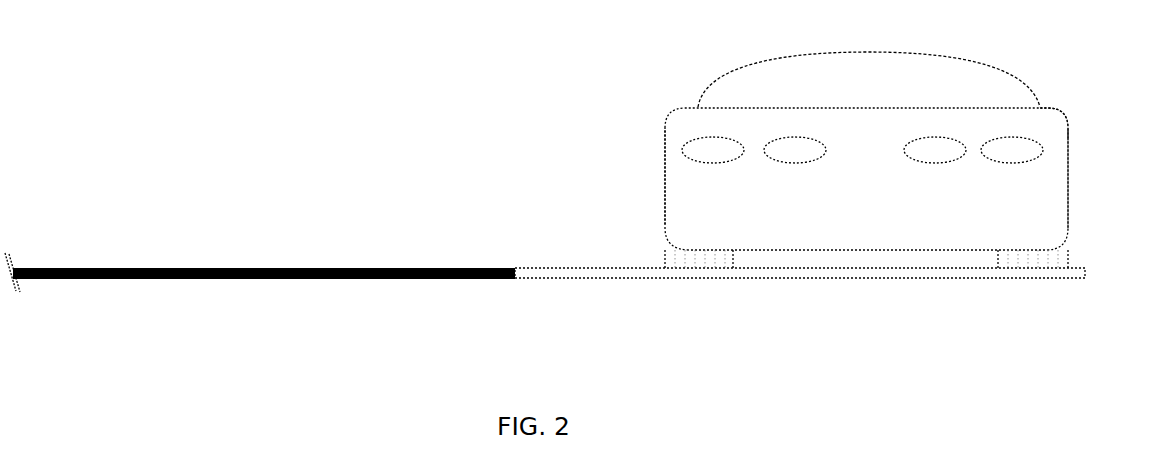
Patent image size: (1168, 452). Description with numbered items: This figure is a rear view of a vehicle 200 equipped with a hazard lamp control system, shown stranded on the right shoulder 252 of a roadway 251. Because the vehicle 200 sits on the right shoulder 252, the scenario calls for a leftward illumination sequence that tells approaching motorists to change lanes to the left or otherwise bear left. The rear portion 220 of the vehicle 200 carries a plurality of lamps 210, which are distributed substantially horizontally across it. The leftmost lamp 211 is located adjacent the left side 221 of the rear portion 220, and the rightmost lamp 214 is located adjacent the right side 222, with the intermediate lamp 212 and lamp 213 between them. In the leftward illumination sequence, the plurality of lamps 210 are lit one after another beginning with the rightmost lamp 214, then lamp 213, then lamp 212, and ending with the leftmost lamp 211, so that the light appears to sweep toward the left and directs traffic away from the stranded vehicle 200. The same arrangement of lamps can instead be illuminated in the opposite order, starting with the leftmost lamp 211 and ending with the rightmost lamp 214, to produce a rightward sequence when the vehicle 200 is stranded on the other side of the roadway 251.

The vehicle 200 is at (1037, 59).
The plurality of lamps 210 is at (681, 131).
The leftmost lamp 211 is at (713, 165).
The lamp 212 is at (795, 165).
The lamp 213 is at (935, 165).
The rightmost lamp 214 is at (1012, 165).
The rear portion 220 is at (1052, 198).
The left side 221 is at (663, 190).
The right side 222 is at (1068, 143).
The roadway 251 is at (447, 279).
The right shoulder 252 is at (593, 279).